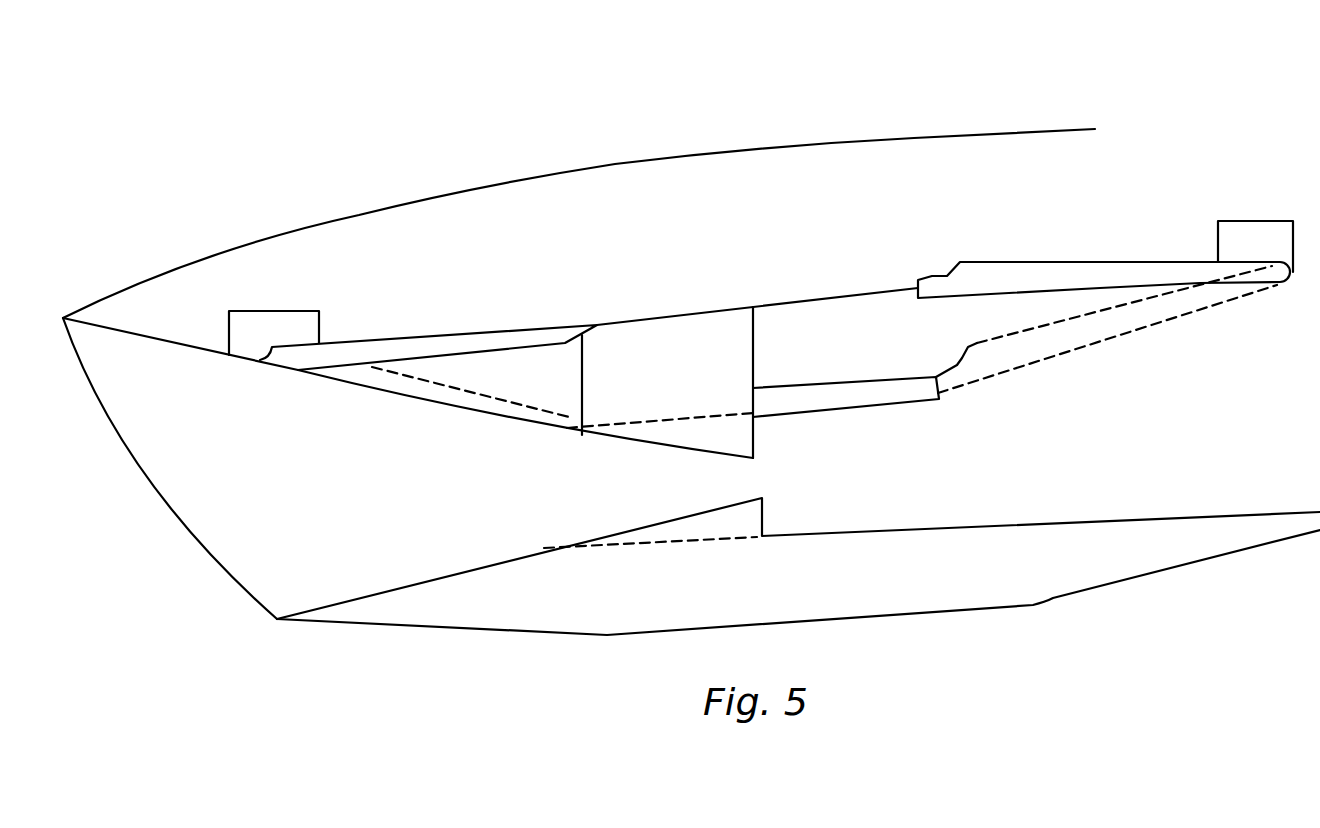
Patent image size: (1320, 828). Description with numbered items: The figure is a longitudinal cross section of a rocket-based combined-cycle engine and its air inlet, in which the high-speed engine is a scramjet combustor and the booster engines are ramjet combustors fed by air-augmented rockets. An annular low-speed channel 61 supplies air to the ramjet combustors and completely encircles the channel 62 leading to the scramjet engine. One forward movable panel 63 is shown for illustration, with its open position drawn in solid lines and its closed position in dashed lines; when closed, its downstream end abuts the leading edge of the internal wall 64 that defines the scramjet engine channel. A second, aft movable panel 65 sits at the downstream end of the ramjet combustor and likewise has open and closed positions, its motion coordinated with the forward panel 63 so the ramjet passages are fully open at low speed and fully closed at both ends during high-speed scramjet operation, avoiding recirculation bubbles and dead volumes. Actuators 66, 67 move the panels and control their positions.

The low-speed channel 61 is at (523, 375).
The channel to the high-speed (scramjet) engine 62 is at (635, 488).
The movable panel 63 is at (397, 337).
The internal wall 64 is at (577, 434).
The aft movable panel 65 is at (1095, 262).
The actuator 66 is at (273, 309).
The actuator 67 is at (1237, 220).